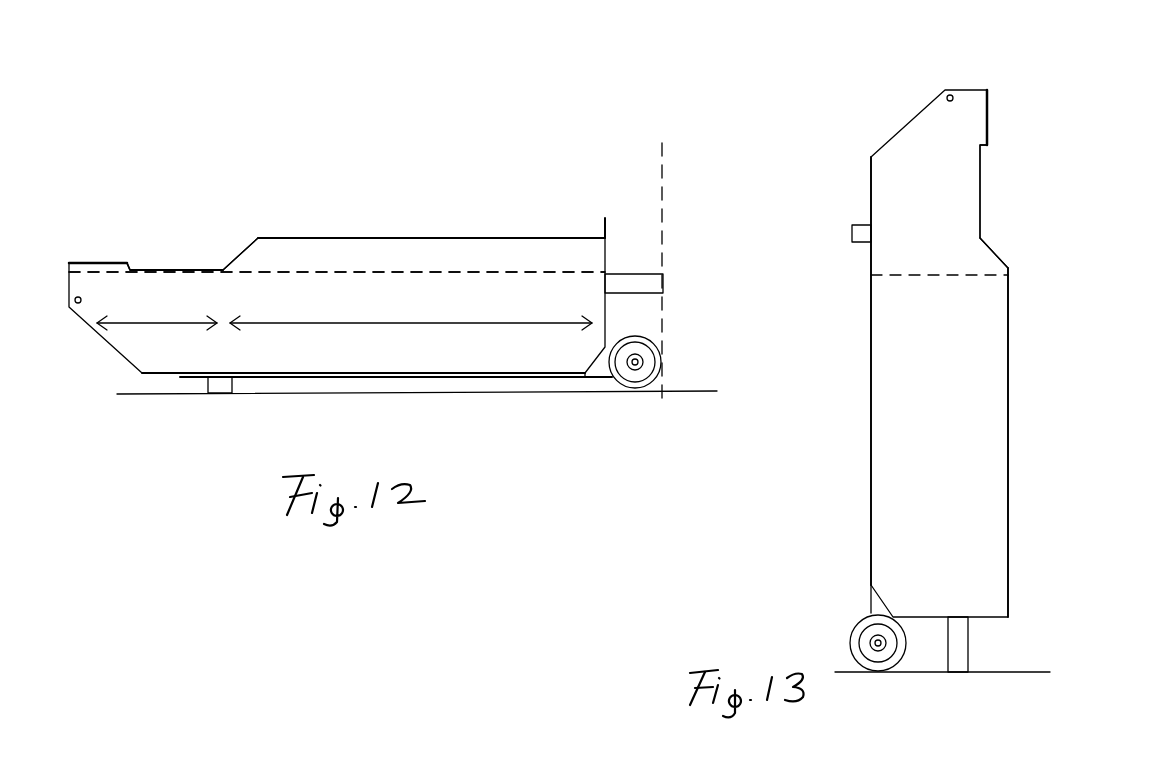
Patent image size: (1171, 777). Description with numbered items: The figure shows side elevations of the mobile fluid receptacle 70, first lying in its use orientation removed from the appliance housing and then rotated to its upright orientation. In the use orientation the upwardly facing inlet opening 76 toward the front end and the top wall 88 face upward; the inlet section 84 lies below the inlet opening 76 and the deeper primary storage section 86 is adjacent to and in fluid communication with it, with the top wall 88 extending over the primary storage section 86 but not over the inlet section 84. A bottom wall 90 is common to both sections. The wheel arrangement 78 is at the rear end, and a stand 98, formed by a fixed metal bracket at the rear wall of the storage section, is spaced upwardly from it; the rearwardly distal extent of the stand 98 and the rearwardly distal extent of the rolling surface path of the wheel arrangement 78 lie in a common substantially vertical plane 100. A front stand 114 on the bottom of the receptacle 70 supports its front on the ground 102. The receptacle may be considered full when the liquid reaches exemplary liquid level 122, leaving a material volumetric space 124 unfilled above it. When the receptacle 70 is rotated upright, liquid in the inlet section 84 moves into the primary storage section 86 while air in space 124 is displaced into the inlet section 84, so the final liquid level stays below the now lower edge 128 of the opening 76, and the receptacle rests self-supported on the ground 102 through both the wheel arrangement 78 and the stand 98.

In FIG. 12, the mobile fluid receptacle 70 is at (206, 229).
In FIG. 13, the mobile fluid receptacle 70 is at (912, 82).
In FIG. 12, the inlet opening 76 is at (155, 267).
In FIG. 13, the inlet opening 76 is at (980, 203).
In FIG. 12, the wheel arrangement 78 is at (612, 385).
In FIG. 13, the wheel arrangement 78 is at (846, 660).
In FIG. 12, the inlet section 84 is at (147, 324).
In FIG. 12, the primary storage section 86 is at (373, 328).
In FIG. 12, the top wall 88 is at (347, 238).
In FIG. 12, the bottom wall 90 is at (407, 373).
In FIG. 12, the stand 98 is at (637, 274).
In FIG. 13, the stand 98 is at (968, 645).
In FIG. 12, the common substantially vertical plane 100 is at (662, 152).
In FIG. 12, the ground 102 is at (292, 395).
In FIG. 13, the ground 102 is at (1007, 672).
In FIG. 12, the stand 114 is at (208, 385).
In FIG. 12, the liquid level 122 is at (253, 268).
In FIG. 12, the volumetric space 124 is at (453, 252).
In FIG. 13, the volumetric space 124 is at (973, 276).
In FIG. 13, the edge 128 is at (980, 237).